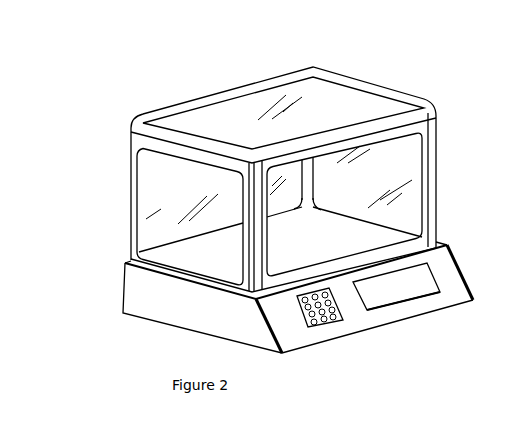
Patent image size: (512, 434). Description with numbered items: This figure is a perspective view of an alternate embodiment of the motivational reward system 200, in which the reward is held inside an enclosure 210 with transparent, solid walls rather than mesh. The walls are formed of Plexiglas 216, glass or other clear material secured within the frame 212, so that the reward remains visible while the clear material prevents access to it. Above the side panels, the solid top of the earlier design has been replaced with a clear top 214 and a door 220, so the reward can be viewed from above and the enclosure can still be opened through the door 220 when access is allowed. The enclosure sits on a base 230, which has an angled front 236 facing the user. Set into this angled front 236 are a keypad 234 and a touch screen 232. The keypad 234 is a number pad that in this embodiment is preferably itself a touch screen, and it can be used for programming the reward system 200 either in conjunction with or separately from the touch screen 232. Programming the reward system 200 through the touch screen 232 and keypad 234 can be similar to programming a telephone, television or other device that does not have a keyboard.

The reward system 200 is at (442, 58).
The enclosure 210 is at (437, 195).
The frame 212 is at (130, 170).
The clear top 214 is at (246, 108).
The Plexiglas 216 is at (150, 215).
The door 220 is at (430, 155).
The base 230 is at (142, 298).
The touch screen 232 is at (390, 305).
The keypad 234 is at (312, 332).
The angled front 236 is at (452, 275).